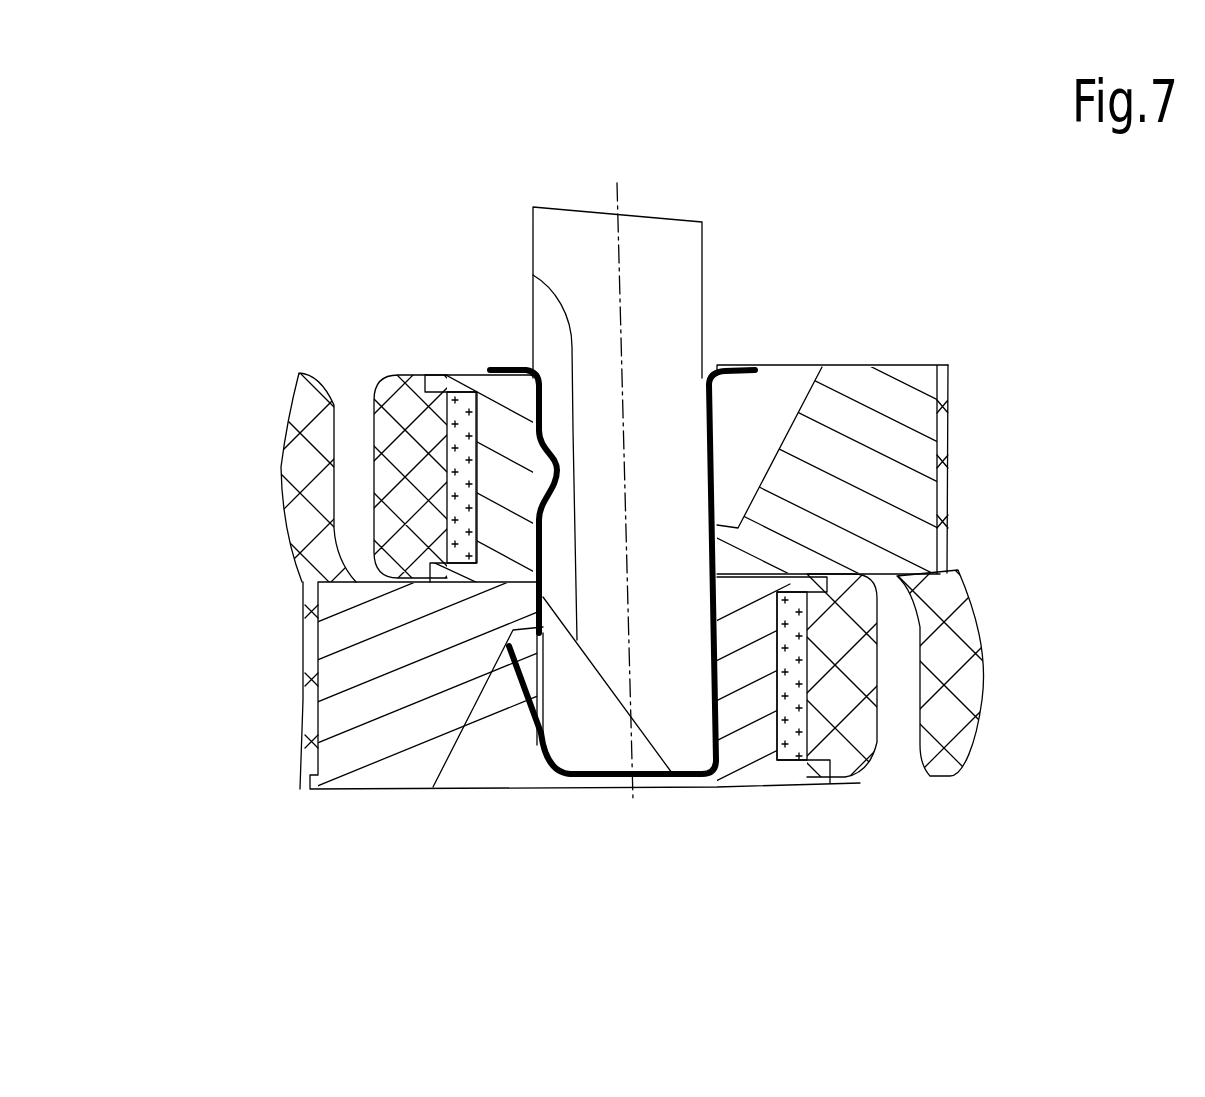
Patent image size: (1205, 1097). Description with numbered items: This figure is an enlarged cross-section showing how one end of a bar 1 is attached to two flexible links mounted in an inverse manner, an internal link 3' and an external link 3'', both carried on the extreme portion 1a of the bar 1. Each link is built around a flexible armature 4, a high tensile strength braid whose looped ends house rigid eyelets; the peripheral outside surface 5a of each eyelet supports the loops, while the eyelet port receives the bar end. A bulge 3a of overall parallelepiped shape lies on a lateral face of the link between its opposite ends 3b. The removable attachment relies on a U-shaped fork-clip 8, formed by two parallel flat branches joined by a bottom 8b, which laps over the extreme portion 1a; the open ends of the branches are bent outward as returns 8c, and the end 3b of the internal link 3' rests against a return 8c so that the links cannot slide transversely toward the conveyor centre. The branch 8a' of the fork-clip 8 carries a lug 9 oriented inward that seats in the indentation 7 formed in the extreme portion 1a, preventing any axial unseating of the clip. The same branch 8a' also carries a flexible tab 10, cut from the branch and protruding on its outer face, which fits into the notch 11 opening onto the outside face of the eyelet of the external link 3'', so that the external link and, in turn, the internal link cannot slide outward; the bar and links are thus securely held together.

The bar 1 is at (680, 247).
The extreme portion of bar 1a is at (690, 742).
The internal link 3' is at (832, 404).
The external link 3'' is at (585, 753).
The bulge 3a is at (957, 737).
The end of flexible link 3b is at (863, 733).
The flexible armature 4 is at (797, 745).
The peripheral outside surface of eyelet 5a is at (900, 492).
The indentation 7 is at (537, 278).
The fork-clip 8 is at (715, 490).
The branch of fork-clip 8a' is at (628, 813).
The bottom of fork-clip 8b is at (597, 780).
The return 8c is at (737, 362).
The lug 9 is at (563, 470).
The flexible tab 10 is at (503, 738).
The notch 11 is at (748, 425).